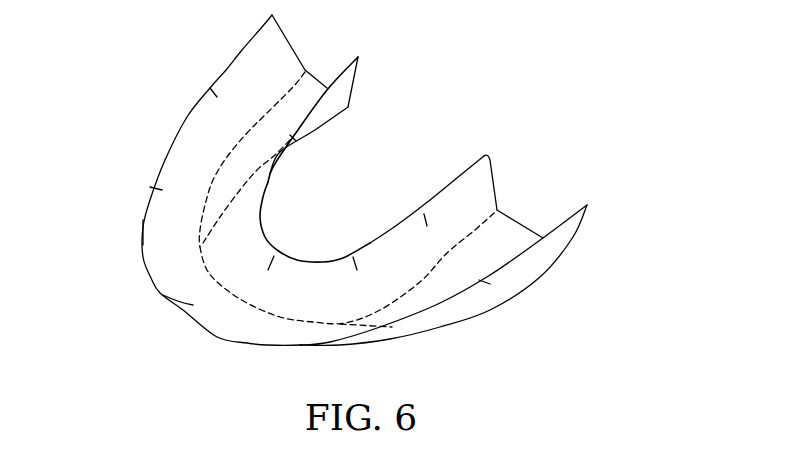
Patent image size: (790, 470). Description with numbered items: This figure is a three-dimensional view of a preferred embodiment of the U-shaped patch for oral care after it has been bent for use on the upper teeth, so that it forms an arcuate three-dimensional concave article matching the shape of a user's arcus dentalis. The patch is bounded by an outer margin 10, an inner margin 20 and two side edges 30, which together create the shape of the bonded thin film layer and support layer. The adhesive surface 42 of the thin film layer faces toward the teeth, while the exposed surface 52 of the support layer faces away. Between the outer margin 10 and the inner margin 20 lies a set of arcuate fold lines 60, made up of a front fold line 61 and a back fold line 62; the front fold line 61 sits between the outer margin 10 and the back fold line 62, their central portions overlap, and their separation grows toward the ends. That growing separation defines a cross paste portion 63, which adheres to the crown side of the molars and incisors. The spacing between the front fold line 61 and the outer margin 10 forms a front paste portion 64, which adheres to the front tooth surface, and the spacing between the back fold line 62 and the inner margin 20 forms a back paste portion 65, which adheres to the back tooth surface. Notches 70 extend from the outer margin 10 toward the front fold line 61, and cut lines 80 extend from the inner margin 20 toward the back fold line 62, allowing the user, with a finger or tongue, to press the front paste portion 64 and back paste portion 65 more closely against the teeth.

The outer margin 10 is at (192, 320).
The inner margin 20 is at (307, 260).
The side edges 30 is at (314, 73).
The adhesive surface 42 is at (250, 62).
The exposed surface 52 is at (352, 96).
The set of arcuate fold lines 60 is at (245, 309).
The front fold line 61 is at (247, 133).
The back fold line 62 is at (238, 185).
The cross paste portion 63 is at (503, 222).
The front paste portion 64 is at (162, 233).
The back paste portion 65 is at (487, 170).
The notches 70 is at (163, 295).
The cut lines 80 is at (427, 218).